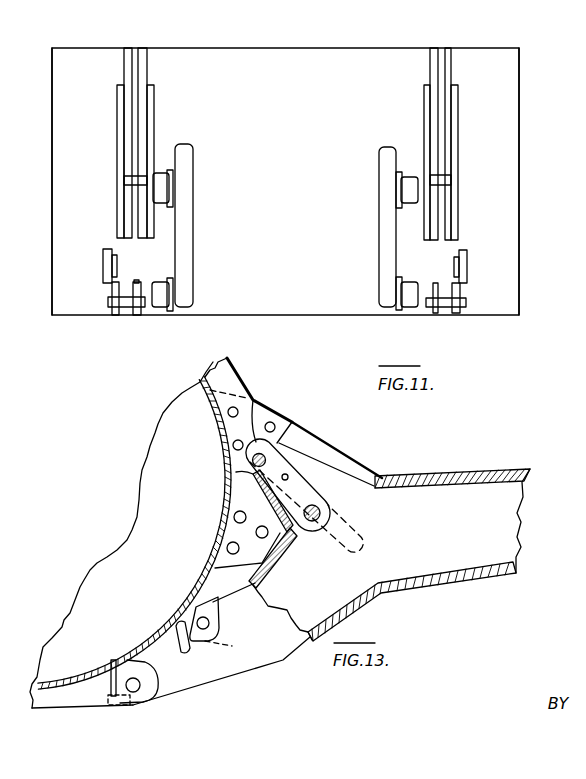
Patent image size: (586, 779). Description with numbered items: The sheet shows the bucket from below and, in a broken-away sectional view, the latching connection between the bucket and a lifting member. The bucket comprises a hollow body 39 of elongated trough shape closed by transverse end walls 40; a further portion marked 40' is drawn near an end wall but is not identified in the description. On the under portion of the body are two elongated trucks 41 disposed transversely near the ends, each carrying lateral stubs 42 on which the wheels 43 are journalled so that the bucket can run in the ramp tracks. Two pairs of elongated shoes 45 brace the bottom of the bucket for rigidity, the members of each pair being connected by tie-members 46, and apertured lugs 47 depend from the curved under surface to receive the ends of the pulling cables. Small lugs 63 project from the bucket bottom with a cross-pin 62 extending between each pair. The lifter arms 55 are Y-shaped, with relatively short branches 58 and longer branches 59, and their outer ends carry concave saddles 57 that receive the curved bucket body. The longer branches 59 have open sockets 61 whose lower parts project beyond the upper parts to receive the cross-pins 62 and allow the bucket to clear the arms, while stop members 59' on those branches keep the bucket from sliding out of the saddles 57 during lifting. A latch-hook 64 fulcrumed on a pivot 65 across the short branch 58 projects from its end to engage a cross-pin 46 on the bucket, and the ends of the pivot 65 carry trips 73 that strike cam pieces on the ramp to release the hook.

In FIG. 11, the hollow body 39 is at (325, 75).
In FIG. 13, the hollow body 39 is at (127, 563).
In FIG. 11, the transverse end walls 40 is at (291, 181).
In FIG. 13, the transverse end walls 40 is at (171, 535).
In FIG. 11, the trucks 41 is at (185, 224).
In FIG. 11, the lateral stubs 42 is at (177, 186).
In FIG. 11, the wheels 43 is at (162, 185).
In FIG. 11, the elongated shoes 45 is at (143, 48).
In FIG. 13, the elongated shoes 45 is at (225, 373).
In FIG. 11, the tie-members 46 is at (124, 183).
In FIG. 13, the tie-members 46 is at (238, 475).
In FIG. 11, the lugs 47 is at (103, 273).
In FIG. 13, the lugs 47 is at (197, 608).
In FIG. 13, the lifter arms 55 is at (503, 512).
In FIG. 13, the concave saddles 57 is at (255, 562).
In FIG. 13, the short branches 58 is at (317, 437).
In FIG. 13, the longer branches 59 is at (221, 683).
In FIG. 13, the stop members 59' is at (190, 654).
In FIG. 13, the plate edge 40' is at (232, 642).
In FIG. 13, the open sockets 61 is at (110, 695).
In FIG. 11, the cross-pins 62 is at (127, 308).
In FIG. 13, the cross-pins 62 is at (140, 692).
In FIG. 11, the small lugs 63 is at (137, 282).
In FIG. 13, the small lugs 63 is at (115, 693).
In FIG. 13, the latch-hook 64 is at (255, 408).
In FIG. 13, the pivot 65 is at (325, 511).
In FIG. 13, the trips 73 is at (372, 540).